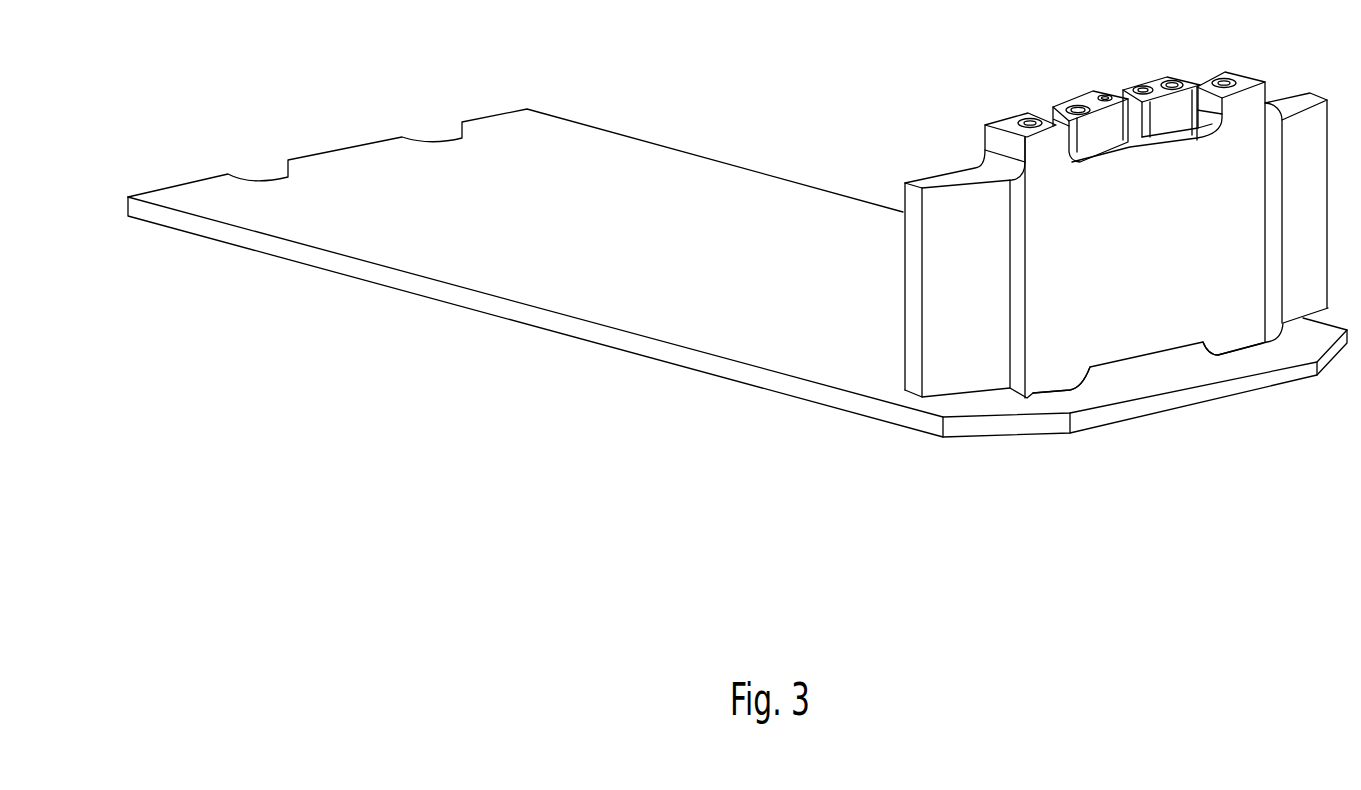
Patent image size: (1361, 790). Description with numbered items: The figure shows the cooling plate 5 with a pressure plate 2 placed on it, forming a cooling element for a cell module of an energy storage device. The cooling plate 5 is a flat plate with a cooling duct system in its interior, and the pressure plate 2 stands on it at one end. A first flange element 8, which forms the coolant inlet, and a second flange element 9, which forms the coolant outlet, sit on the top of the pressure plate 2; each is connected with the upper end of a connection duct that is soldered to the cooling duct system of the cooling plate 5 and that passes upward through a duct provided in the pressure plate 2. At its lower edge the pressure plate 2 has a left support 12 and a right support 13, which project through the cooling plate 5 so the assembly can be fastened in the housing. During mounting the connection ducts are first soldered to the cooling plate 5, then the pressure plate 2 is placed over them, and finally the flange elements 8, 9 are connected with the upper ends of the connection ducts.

The pressure plate 2 is at (1238, 105).
The cooling plate 5 is at (652, 303).
The first flange element 8 is at (1088, 93).
The second flange element 9 is at (1150, 82).
The left support 12 is at (1045, 385).
The right support 13 is at (1235, 342).